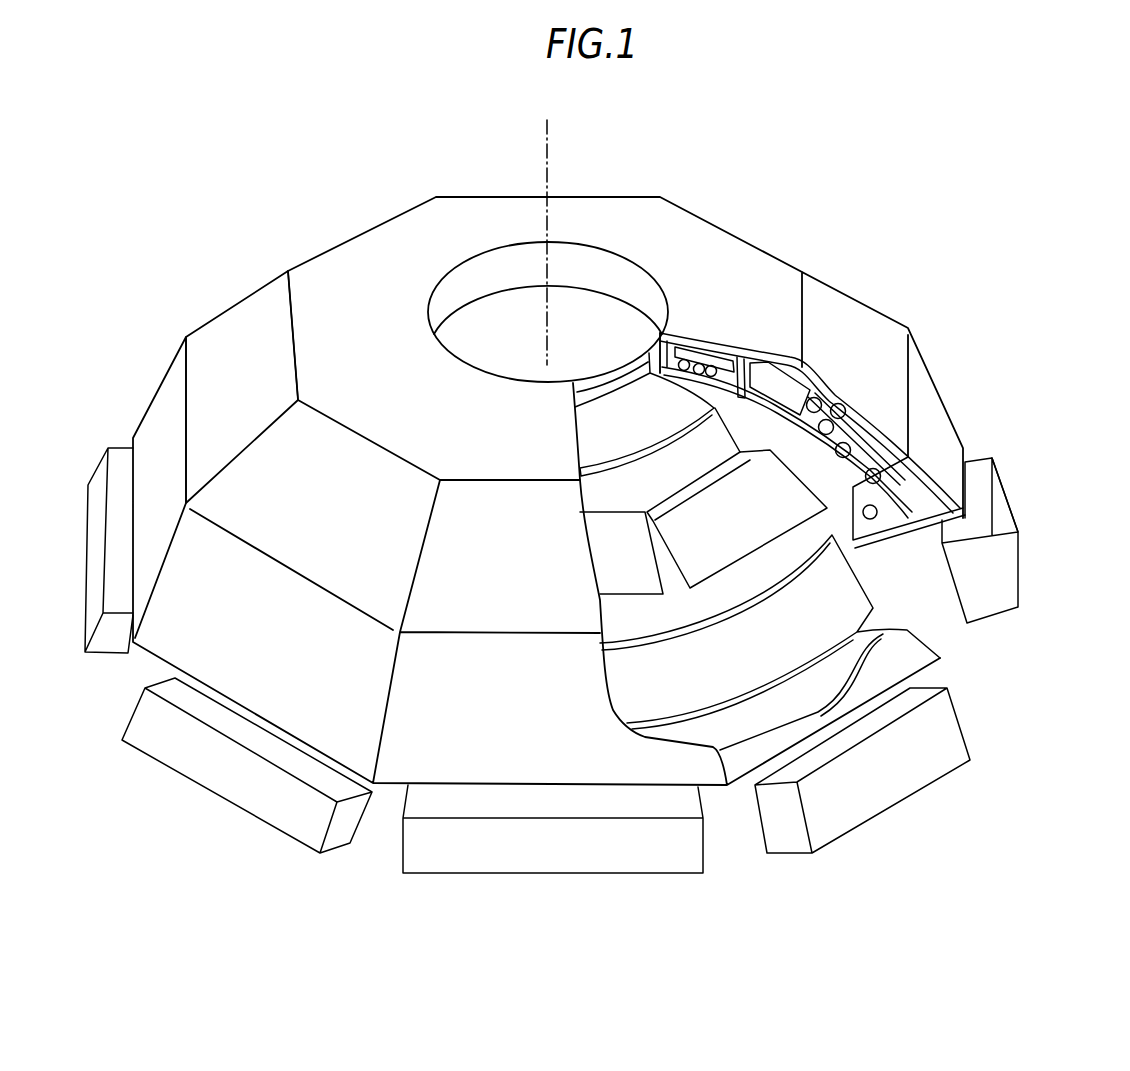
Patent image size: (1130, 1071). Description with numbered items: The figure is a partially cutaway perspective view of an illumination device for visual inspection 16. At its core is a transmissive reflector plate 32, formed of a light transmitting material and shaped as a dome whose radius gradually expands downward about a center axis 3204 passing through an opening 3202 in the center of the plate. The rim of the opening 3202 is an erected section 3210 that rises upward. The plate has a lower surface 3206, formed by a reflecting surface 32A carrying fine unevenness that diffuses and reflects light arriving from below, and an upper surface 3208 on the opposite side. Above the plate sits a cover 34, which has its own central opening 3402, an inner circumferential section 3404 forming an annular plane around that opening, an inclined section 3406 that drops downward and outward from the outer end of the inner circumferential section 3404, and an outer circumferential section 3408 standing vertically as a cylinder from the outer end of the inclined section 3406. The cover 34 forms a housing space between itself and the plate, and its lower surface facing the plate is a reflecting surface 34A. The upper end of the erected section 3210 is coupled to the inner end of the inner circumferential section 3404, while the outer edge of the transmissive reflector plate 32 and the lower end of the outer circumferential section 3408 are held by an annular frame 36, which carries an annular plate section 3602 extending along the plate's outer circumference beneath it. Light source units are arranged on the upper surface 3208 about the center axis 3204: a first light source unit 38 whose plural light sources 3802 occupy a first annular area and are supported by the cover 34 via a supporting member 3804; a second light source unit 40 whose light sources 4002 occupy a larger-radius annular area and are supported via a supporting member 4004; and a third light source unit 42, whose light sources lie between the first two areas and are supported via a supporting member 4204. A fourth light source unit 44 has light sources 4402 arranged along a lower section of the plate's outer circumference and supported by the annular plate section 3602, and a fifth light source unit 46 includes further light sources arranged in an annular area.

The illumination device for visual inspection 16 is at (797, 171).
The transmissive reflector plate 32 is at (763, 568).
The opening 3202 is at (552, 237).
The erected section 3210 is at (597, 269).
The center axis 3204 is at (547, 143).
The lower surface 3206 is at (758, 273).
The reflecting surface 32A is at (735, 355).
The upper surface 3208 is at (757, 357).
The cover 34 is at (258, 289).
The opening 3402 is at (460, 270).
The inner circumferential section 3404 is at (348, 271).
The inclined section 3406 is at (240, 327).
The outer circumferential section 3408 is at (167, 412).
The reflecting surface 34A is at (847, 402).
The frame 36 is at (617, 665).
The annular plate section 3602 is at (917, 503).
The first light source unit 38 is at (810, 320).
The light sources 3802 is at (697, 375).
The supporting member 3804 is at (706, 352).
The second light source unit 40 is at (911, 370).
The light sources 4002 is at (878, 425).
The supporting member 4004 is at (900, 440).
The third light source unit 42 is at (851, 354).
The supporting member 4204 is at (812, 390).
The fourth light source unit 44 is at (959, 431).
The light sources 4402 is at (866, 503).
The fifth light source unit 46 is at (1001, 519).